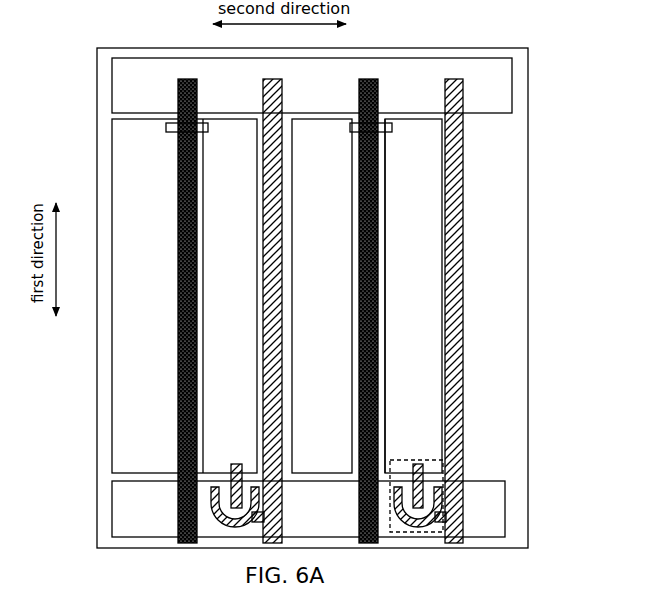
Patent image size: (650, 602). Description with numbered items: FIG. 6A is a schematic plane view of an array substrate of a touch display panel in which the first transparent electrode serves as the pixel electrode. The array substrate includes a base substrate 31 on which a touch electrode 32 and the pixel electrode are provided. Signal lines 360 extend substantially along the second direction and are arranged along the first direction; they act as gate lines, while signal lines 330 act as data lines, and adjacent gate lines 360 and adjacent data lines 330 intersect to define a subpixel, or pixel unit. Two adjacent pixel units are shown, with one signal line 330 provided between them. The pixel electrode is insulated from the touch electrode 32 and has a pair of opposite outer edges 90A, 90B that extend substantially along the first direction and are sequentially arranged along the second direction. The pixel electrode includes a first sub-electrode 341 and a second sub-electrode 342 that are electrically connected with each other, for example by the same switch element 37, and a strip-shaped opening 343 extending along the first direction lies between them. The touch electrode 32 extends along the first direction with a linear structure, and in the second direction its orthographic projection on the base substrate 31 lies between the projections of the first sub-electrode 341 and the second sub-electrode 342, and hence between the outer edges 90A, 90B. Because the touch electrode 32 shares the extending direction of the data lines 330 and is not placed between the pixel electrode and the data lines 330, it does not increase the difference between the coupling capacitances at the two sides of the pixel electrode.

The base substrate 31 is at (97, 143).
The signal lines 360 is at (140, 91).
The first sub-electrode 341 is at (322, 296).
The second sub-electrode 342 is at (413, 296).
The strip-shaped opening 343 is at (387, 280).
The touch electrode 32 is at (377, 195).
The outer edge 90A is at (292, 278).
The signal lines 330 is at (463, 165).
The outer edge 90B is at (463, 383).
The switch element 37 is at (420, 461).